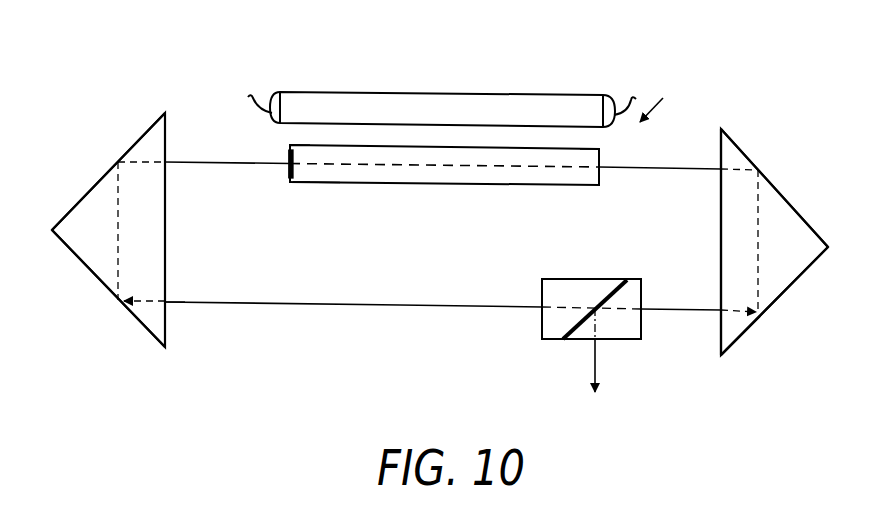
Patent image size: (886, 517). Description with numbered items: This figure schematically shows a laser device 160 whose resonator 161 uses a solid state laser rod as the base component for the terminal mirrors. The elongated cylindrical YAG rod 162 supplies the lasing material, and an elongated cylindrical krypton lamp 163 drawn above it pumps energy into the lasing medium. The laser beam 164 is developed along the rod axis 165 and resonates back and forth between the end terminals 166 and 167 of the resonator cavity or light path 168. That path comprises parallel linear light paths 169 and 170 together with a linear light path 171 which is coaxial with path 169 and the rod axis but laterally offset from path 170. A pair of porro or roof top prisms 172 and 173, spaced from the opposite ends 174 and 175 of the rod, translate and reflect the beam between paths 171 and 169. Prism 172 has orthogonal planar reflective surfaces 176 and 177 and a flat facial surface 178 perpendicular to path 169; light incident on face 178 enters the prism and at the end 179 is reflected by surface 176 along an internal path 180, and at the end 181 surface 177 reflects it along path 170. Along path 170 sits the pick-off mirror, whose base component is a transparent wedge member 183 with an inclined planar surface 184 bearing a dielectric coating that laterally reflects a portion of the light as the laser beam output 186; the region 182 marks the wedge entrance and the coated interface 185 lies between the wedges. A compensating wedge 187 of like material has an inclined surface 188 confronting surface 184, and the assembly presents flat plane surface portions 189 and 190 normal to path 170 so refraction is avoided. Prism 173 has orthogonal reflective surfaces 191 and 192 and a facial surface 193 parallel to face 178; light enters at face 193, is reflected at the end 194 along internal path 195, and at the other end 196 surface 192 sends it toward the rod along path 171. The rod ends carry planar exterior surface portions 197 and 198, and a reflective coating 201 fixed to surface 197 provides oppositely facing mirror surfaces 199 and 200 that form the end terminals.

The optical assembly / right prism 160 is at (744, 130).
The resonator 161 is at (675, 99).
The YAG rod 162 is at (408, 186).
The krypton lamp 163 is at (325, 92).
The laser beam 164 is at (412, 305).
The rod axis 165 is at (517, 172).
The end terminal 166 is at (286, 168).
The end terminal 167 is at (298, 152).
The light path 168 is at (302, 284).
The linear light path 169 is at (660, 170).
The linear light path 170 is at (700, 308).
The linear light path 171 is at (180, 165).
The porro prism 172 is at (795, 284).
The porro prism 173 is at (116, 312).
The rod end 174 is at (300, 186).
The rod end 175 is at (600, 182).
The light reflective surface 176 is at (783, 200).
The light reflective surface 177 is at (740, 326).
The facial surface 178 is at (720, 247).
The end of path 179 is at (757, 171).
The linear light path 180 is at (758, 272).
The end of path 181 is at (757, 308).
The beam splitter entrance face 182 is at (542, 291).
The wedge member 183 is at (565, 280).
The inclined planar surface 184 is at (553, 341).
The partially reflecting surface 185 is at (631, 278).
The laser beam output 186 is at (598, 358).
The compensating wedge 187 is at (632, 341).
The inclined surface 188 is at (604, 285).
The flat plane surface portion 189 is at (542, 314).
The flat plane surface portion 190 is at (642, 330).
The light reflective surface 191 is at (78, 257).
The light reflective surface 192 is at (84, 200).
The facial surface 193 is at (166, 285).
The end of path 194 is at (150, 296).
The linear light path 195 is at (122, 233).
The end of path 196 is at (141, 177).
The planar exterior surface portion 197 is at (293, 184).
The planar exterior surface portion 198 is at (601, 151).
The reflective surface 199 is at (287, 158).
The reflective surface 200 is at (290, 143).
The coating 201 is at (287, 176).